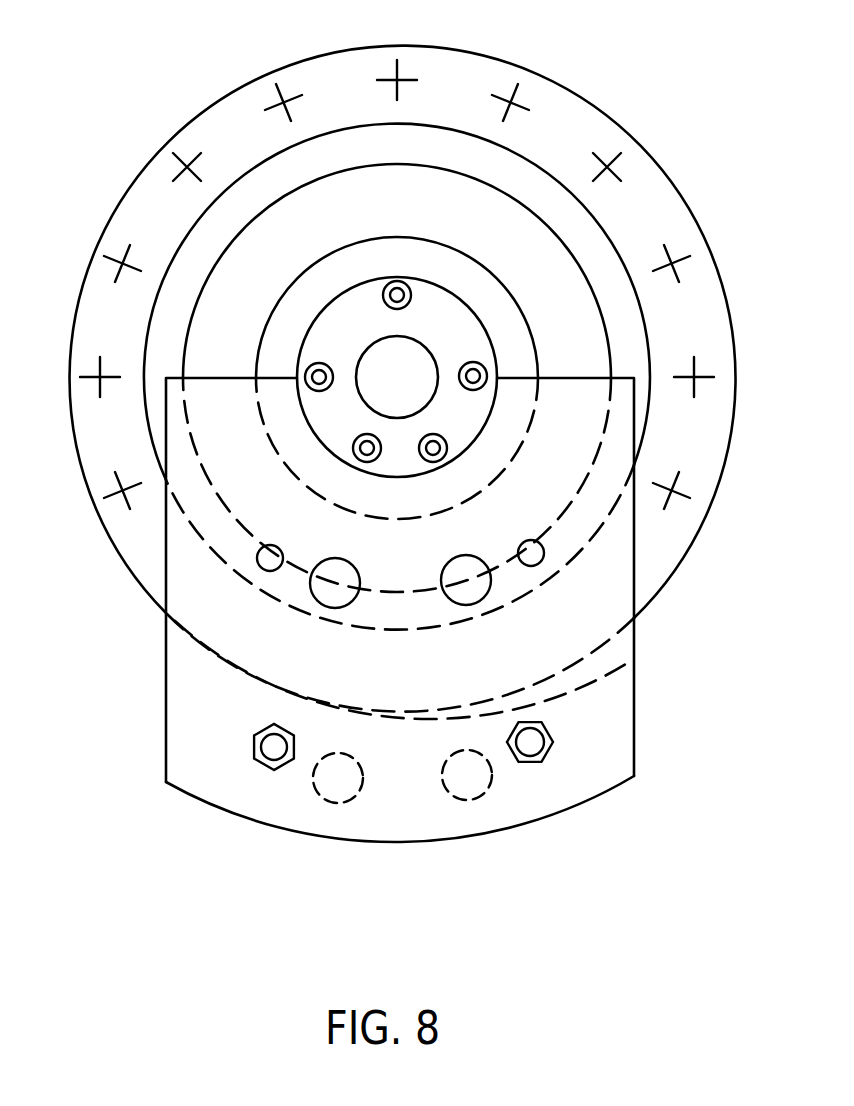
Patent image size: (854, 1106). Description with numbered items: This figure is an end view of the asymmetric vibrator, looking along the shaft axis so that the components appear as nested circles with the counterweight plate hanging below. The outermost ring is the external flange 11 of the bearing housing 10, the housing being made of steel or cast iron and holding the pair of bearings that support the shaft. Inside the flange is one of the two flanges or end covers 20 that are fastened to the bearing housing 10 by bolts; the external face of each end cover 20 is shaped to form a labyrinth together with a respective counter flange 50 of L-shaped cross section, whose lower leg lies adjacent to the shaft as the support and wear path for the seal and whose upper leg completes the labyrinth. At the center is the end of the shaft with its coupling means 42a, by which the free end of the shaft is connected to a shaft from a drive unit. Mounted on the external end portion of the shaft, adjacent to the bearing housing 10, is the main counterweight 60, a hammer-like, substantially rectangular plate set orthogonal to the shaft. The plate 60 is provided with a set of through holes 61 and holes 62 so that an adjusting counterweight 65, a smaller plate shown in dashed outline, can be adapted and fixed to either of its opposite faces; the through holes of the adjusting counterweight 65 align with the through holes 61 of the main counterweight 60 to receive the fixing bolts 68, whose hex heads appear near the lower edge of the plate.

The bearing housing 10 is at (207, 247).
The external flange 11 is at (197, 128).
The end flange or cover 20 is at (235, 343).
The coupling means 42a is at (460, 315).
The counter flange 50 is at (433, 251).
The main counterweight 60 is at (516, 838).
The through holes 61 is at (262, 547).
The holes 62 is at (325, 578).
The adjusting counterweight 65 is at (517, 687).
The fixing bolts 68 is at (273, 752).